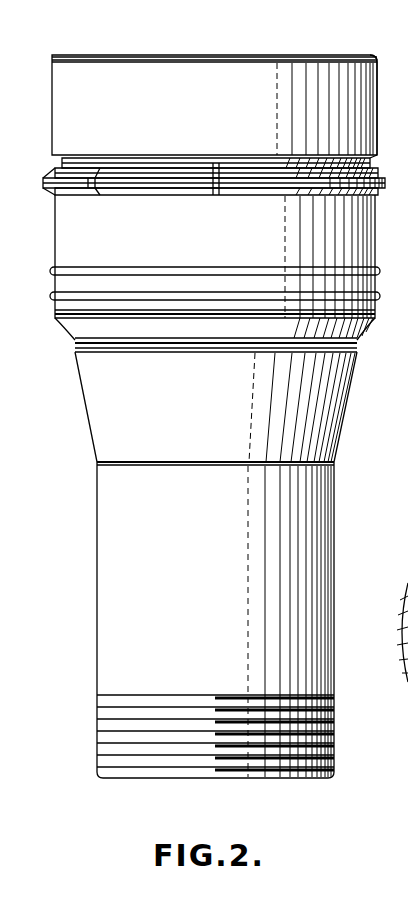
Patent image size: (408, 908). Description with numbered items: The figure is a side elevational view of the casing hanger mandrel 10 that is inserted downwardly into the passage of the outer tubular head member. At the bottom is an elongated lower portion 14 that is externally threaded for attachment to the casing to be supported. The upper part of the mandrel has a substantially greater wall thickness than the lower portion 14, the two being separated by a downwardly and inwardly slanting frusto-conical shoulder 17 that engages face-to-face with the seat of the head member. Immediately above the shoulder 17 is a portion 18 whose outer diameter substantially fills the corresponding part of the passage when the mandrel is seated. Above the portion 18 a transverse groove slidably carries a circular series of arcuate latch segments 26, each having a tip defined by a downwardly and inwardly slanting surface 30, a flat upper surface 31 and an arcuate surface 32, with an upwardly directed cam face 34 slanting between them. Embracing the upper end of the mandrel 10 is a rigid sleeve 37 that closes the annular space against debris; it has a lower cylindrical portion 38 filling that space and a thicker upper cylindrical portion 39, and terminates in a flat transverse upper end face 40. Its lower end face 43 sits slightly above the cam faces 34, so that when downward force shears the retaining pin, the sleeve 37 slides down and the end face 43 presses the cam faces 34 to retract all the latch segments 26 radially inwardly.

The hanger mandrel 10 is at (345, 411).
The elongated lower portion 14 is at (97, 745).
The frusto-conical shoulder 17 is at (74, 333).
The portion 18 is at (55, 257).
The arcuate latch segments 26 is at (194, 194).
The downwardly and inwardly slanting surface 30 is at (55, 191).
The flat upper surface 31 is at (55, 173).
The arcuate surface 32 is at (43, 183).
The cam face 34 is at (62, 163).
The rigid sleeve 37 is at (250, 57).
The lower cylindrical portion 38 is at (378, 138).
The upper cylindrical portion 39 is at (374, 64).
The upper end face 40 is at (112, 57).
The lower end face 43 is at (376, 160).